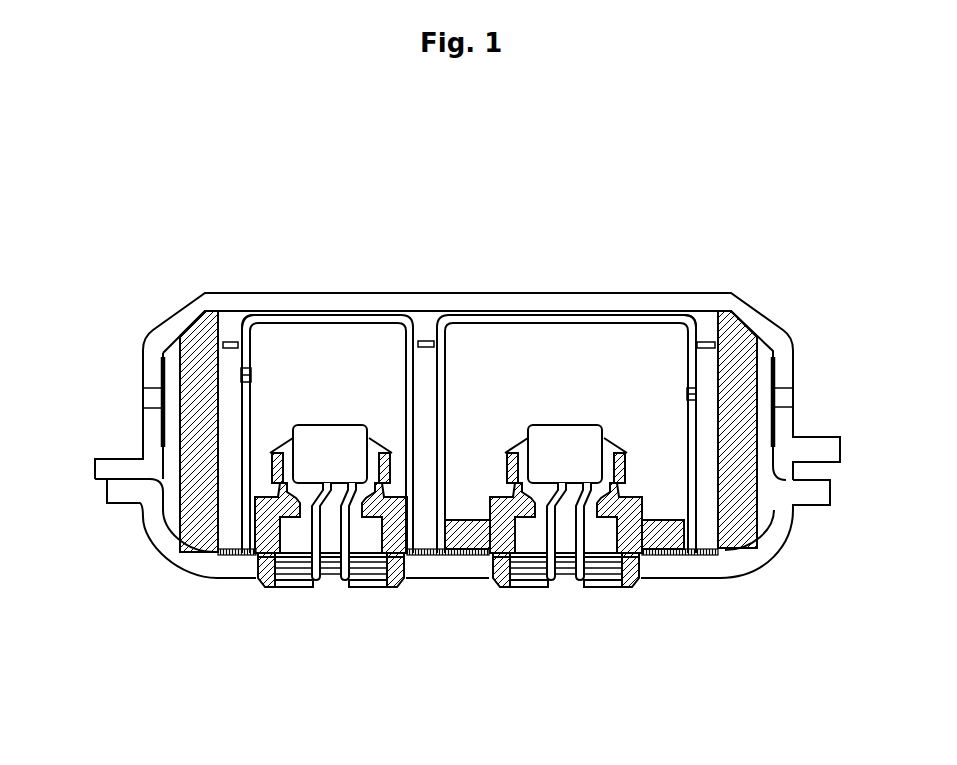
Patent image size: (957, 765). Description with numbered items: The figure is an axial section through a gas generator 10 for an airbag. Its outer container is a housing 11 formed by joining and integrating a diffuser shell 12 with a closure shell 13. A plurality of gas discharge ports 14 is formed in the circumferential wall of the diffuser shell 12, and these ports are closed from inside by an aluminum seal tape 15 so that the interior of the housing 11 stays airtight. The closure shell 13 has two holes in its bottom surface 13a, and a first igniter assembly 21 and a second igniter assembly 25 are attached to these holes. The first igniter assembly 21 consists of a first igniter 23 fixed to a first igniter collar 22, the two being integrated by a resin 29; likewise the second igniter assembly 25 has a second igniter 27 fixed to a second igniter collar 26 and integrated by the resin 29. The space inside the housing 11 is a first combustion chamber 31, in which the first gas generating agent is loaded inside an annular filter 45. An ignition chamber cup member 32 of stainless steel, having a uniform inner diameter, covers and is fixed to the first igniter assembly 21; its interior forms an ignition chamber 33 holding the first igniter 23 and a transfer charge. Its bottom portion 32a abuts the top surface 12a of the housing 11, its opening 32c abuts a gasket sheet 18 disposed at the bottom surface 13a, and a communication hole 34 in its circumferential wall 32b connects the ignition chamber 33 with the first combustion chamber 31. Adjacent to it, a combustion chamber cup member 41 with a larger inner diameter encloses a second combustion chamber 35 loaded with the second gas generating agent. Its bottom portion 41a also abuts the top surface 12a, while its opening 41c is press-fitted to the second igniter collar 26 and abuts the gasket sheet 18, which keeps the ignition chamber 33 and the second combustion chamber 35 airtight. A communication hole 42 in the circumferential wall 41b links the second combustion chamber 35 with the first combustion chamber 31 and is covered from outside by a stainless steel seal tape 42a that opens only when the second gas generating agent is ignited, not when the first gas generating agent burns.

The gas generator 10 is at (502, 270).
The housing 11 is at (904, 431).
The diffuser shell 12 is at (838, 437).
The top surface 12a is at (230, 316).
The closure shell 13 is at (787, 527).
The bottom surface 13a is at (664, 578).
The gas discharge ports 14 is at (150, 398).
The aluminum seal tape 15 is at (168, 370).
The gasket sheet 18 is at (208, 560).
The first igniter assembly 21 is at (303, 600).
The first igniter collar 22 is at (262, 512).
The first igniter 23 is at (345, 466).
The second igniter assembly 25 is at (544, 601).
The second igniter collar 26 is at (472, 557).
The second igniter 27 is at (579, 466).
The resin 29 is at (370, 442).
The first combustion chamber 31 is at (227, 368).
The ignition chamber cup member 32 is at (236, 409).
The bottom portion 32a is at (290, 324).
The circumferential wall 32b is at (249, 392).
The opening 32c is at (246, 556).
The ignition chamber 33 is at (359, 361).
The communication hole 34 is at (250, 375).
The second combustion chamber 35 is at (544, 363).
The combustion chamber cup member 41 is at (740, 492).
The bottom portion 41a is at (636, 323).
The circumferential wall 41b is at (688, 367).
The opening 41c is at (690, 557).
The communication hole 42 is at (688, 395).
The seal tape 42a is at (718, 397).
The annular filter 45 is at (194, 492).